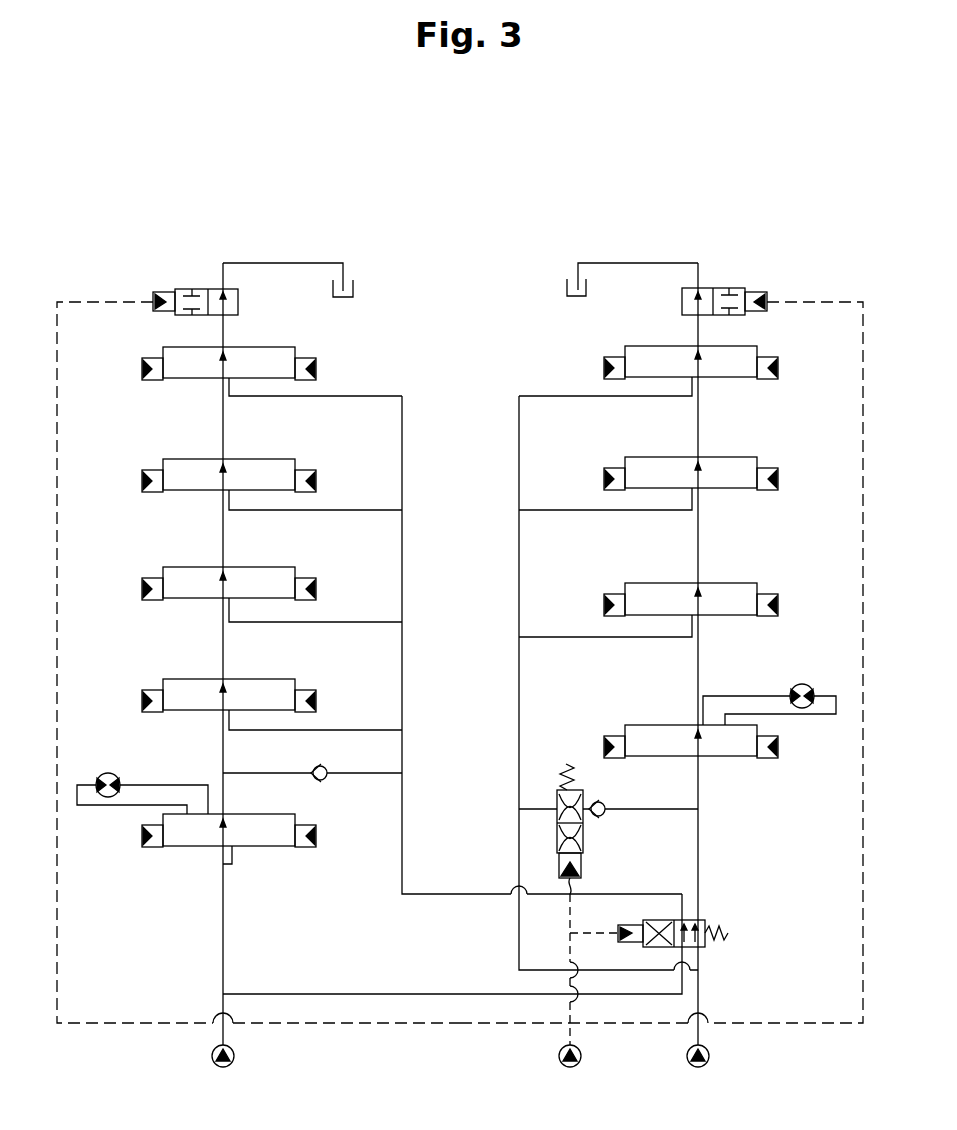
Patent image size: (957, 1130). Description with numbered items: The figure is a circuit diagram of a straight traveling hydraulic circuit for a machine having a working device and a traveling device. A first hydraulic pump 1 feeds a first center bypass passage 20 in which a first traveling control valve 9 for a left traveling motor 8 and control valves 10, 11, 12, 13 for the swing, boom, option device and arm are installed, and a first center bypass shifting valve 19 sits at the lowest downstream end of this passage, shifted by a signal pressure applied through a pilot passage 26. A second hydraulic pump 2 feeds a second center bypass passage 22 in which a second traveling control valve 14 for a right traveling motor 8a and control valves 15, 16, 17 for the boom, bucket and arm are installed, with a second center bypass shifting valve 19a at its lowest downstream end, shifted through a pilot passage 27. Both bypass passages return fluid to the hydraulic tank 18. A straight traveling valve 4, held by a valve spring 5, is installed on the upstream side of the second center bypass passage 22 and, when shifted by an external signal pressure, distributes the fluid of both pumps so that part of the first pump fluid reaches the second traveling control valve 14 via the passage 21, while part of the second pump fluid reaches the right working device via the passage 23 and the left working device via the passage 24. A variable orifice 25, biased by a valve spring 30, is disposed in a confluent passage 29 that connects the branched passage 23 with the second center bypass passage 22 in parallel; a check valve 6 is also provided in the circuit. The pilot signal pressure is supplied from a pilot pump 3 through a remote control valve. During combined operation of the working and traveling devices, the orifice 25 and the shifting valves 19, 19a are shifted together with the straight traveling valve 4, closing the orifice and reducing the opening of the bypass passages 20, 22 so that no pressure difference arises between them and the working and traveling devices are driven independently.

The first hydraulic pump 1 is at (234, 1053).
The second hydraulic pump 2 is at (709, 1053).
The pilot pump 3 is at (581, 1053).
The straight traveling valve 4 is at (672, 918).
The valve spring 5 is at (728, 933).
The check valve 6 is at (323, 764).
The left traveling motor 8 is at (112, 776).
The right traveling motor 8a is at (813, 685).
The first traveling control valve 9 is at (200, 846).
The swing control valve 10 is at (200, 709).
The boom control valve 11 is at (200, 598).
The option device control valve 12 is at (200, 488).
The arm control valve 13 is at (200, 376).
The second traveling control valve 14 is at (713, 757).
The boom control valve 15 is at (713, 617).
The bucket control valve 16 is at (713, 489).
The arm control valve 17 is at (713, 378).
The hydraulic tank 18 is at (353, 283).
The first center bypass shifting valve 19 is at (210, 316).
The second center bypass shifting valve 19a is at (712, 316).
The first center bypass passage 20 is at (224, 942).
The passage 21 is at (383, 992).
The second center bypass passage 22 is at (698, 857).
The passage 23 is at (518, 957).
The passage 24 is at (405, 850).
The variable orifice 25 is at (556, 803).
The pilot passage 26 is at (58, 942).
The pilot passage 27 is at (862, 975).
The confluent passage 29 is at (663, 808).
The valve spring 30 is at (565, 768).